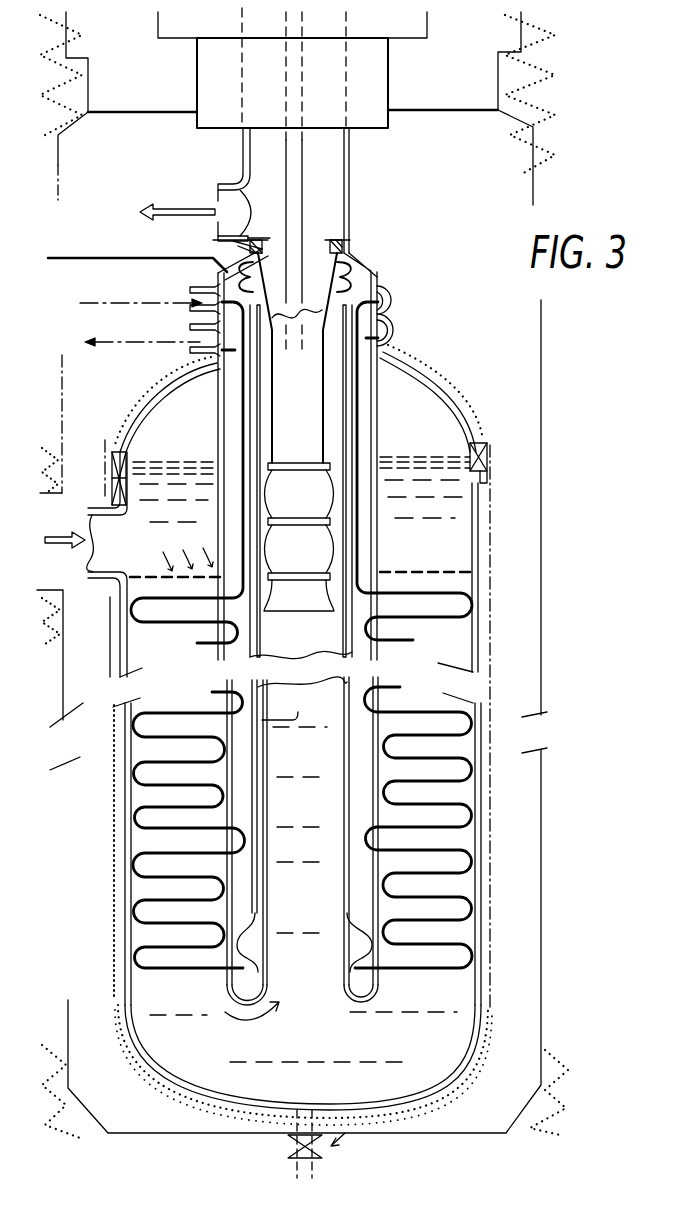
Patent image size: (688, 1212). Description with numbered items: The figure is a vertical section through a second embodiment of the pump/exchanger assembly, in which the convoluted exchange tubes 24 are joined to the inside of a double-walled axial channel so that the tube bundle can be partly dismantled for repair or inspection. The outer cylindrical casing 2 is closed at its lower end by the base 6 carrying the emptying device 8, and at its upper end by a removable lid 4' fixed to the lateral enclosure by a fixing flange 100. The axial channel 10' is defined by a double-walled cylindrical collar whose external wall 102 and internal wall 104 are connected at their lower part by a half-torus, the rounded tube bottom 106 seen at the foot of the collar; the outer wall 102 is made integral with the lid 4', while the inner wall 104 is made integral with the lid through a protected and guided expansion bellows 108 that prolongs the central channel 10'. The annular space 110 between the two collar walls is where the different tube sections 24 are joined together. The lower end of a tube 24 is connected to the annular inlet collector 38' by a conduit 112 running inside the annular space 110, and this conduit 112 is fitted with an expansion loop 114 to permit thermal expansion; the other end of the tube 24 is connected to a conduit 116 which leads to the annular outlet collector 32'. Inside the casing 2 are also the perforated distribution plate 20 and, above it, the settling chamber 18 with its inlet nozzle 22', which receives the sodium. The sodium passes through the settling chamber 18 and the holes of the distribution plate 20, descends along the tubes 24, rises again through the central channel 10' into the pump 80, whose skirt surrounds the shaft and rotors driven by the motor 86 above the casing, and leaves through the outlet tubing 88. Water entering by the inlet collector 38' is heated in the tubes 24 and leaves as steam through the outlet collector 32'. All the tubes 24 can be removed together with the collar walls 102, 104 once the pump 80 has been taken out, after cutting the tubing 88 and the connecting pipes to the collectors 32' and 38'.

The outer casing 2 is at (483, 618).
The removable lid 4' is at (298, 398).
The base 6 is at (441, 1080).
The emptying device 8 is at (332, 1140).
The axial channel 10' is at (365, 869).
The settling chamber 18 is at (438, 468).
The distribution plate 20 is at (452, 574).
The inlet nozzle 22' is at (96, 478).
The exchange tubes 24 is at (150, 841).
The annular outlet collector 32' is at (167, 336).
The annular inlet collector 38' is at (170, 289).
The pump 80 is at (306, 426).
The motor 86 is at (197, 80).
The outlet tubing 88 is at (238, 190).
The fixing flange 100 is at (463, 449).
The external wall 102 is at (197, 636).
The internal wall 104 is at (300, 708).
The tube bottom 106 is at (234, 988).
The bellows 108 is at (368, 287).
The annular space 110 is at (244, 878).
The conduit 112 is at (258, 797).
The expansion loop 114 is at (258, 938).
The conduit 116 is at (240, 513).